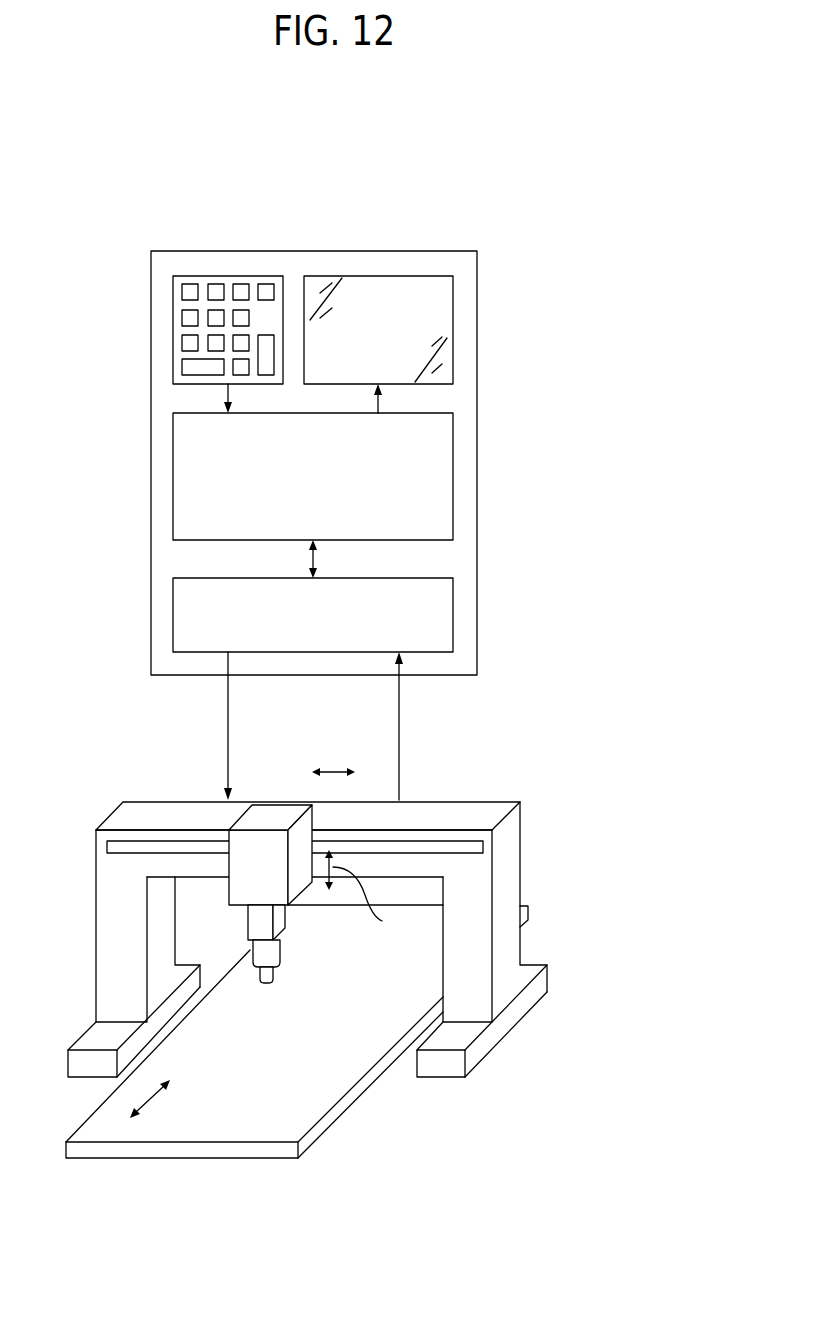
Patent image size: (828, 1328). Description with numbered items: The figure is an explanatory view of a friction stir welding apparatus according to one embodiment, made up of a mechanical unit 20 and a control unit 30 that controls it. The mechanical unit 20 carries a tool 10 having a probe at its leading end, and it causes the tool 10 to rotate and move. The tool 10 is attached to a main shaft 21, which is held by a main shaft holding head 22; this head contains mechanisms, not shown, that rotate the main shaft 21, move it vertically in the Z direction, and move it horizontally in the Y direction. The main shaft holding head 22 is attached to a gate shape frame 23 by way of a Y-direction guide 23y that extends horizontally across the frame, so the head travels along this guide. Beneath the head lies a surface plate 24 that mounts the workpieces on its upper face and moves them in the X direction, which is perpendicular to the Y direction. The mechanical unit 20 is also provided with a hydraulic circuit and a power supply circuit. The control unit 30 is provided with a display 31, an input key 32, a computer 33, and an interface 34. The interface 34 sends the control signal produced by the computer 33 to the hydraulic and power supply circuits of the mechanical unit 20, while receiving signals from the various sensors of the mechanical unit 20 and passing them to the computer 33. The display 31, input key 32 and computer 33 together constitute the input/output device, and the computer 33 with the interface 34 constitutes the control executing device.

The tool 10 is at (273, 977).
The mechanical unit 20 is at (345, 929).
The main shaft 21 is at (278, 927).
The main shaft holding head 22 is at (273, 815).
The gate shape frame 23 is at (507, 887).
The Y-direction guide 23y is at (417, 840).
The surface plate 24 is at (332, 1113).
The control unit 30 is at (400, 407).
The display 31 is at (390, 277).
The input key 32 is at (237, 277).
The computer 33 is at (453, 475).
The interface 34 is at (453, 612).